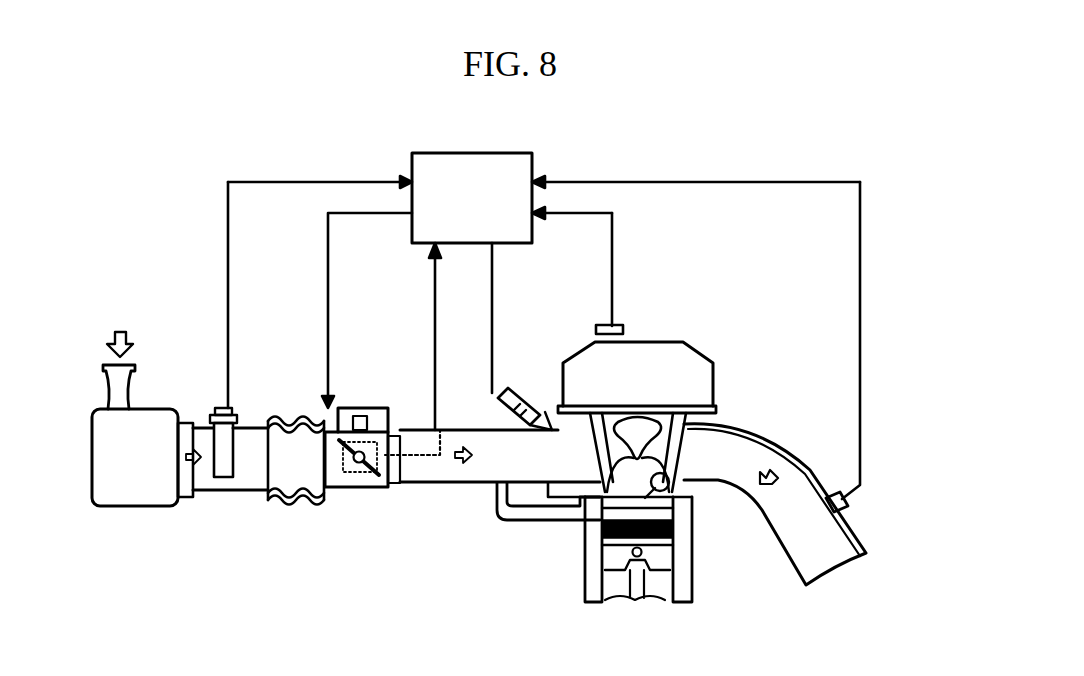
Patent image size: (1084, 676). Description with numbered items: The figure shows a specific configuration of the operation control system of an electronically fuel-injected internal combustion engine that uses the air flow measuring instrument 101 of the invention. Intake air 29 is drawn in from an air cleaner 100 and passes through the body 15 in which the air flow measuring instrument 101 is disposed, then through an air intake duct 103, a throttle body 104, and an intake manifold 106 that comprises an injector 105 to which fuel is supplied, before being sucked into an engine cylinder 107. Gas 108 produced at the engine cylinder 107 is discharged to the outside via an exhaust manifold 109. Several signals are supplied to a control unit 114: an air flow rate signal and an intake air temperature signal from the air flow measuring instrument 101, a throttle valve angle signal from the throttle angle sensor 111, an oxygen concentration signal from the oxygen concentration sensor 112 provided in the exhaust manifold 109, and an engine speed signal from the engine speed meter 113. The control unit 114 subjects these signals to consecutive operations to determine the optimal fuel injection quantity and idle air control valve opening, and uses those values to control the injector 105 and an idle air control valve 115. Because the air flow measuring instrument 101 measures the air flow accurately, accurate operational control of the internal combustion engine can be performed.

The body 15 is at (228, 492).
The intake air 29 is at (130, 337).
The air cleaner 100 is at (145, 407).
The air flow measuring instrument 101 is at (222, 408).
The air intake duct 103 is at (284, 422).
The throttle body 104 is at (375, 488).
The injector 105 is at (505, 392).
The intake manifold 106 is at (445, 408).
The engine cylinder 107 is at (685, 450).
The gas 108 is at (770, 470).
The exhaust manifold 109 is at (808, 450).
The throttle angle sensor 111 is at (353, 488).
The oxygen concentration sensor 112 is at (842, 492).
The engine speed meter 113 is at (628, 330).
The control unit 114 is at (535, 160).
The idle air control valve 115 is at (318, 397).